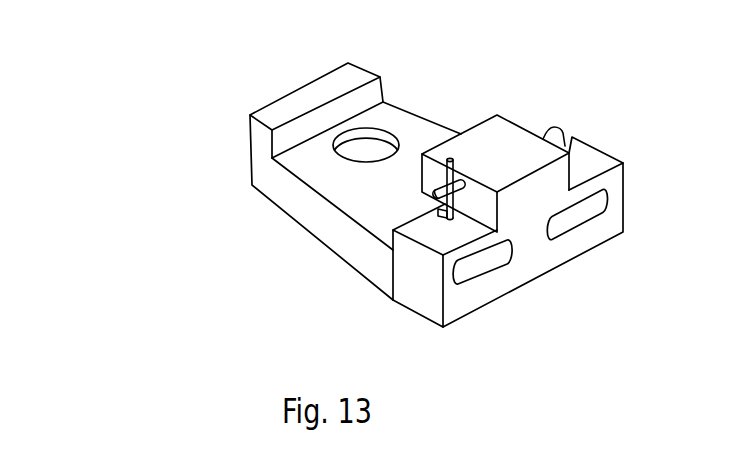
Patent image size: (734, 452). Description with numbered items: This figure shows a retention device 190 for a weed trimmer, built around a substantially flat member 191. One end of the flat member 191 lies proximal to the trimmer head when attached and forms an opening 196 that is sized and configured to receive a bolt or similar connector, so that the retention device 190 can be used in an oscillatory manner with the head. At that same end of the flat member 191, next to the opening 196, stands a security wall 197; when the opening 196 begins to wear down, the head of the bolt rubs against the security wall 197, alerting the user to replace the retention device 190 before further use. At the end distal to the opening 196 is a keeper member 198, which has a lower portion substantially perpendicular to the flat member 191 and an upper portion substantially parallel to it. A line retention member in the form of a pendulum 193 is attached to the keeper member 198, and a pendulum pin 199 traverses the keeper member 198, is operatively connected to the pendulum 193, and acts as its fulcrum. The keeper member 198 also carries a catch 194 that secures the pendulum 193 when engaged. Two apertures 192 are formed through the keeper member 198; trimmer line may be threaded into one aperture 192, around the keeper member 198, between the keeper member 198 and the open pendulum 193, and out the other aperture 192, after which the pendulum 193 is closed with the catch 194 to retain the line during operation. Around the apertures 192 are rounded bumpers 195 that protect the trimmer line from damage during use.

The retention device 190 is at (271, 71).
The flat member 191 is at (320, 180).
The aperture 192 is at (570, 222).
The pendulum 193 is at (446, 204).
The catch 194 is at (438, 208).
The bumper 195 is at (455, 283).
The opening 196 is at (376, 143).
The security wall 197 is at (373, 92).
The keeper member 198 is at (558, 174).
The pendulum pin 199 is at (548, 136).